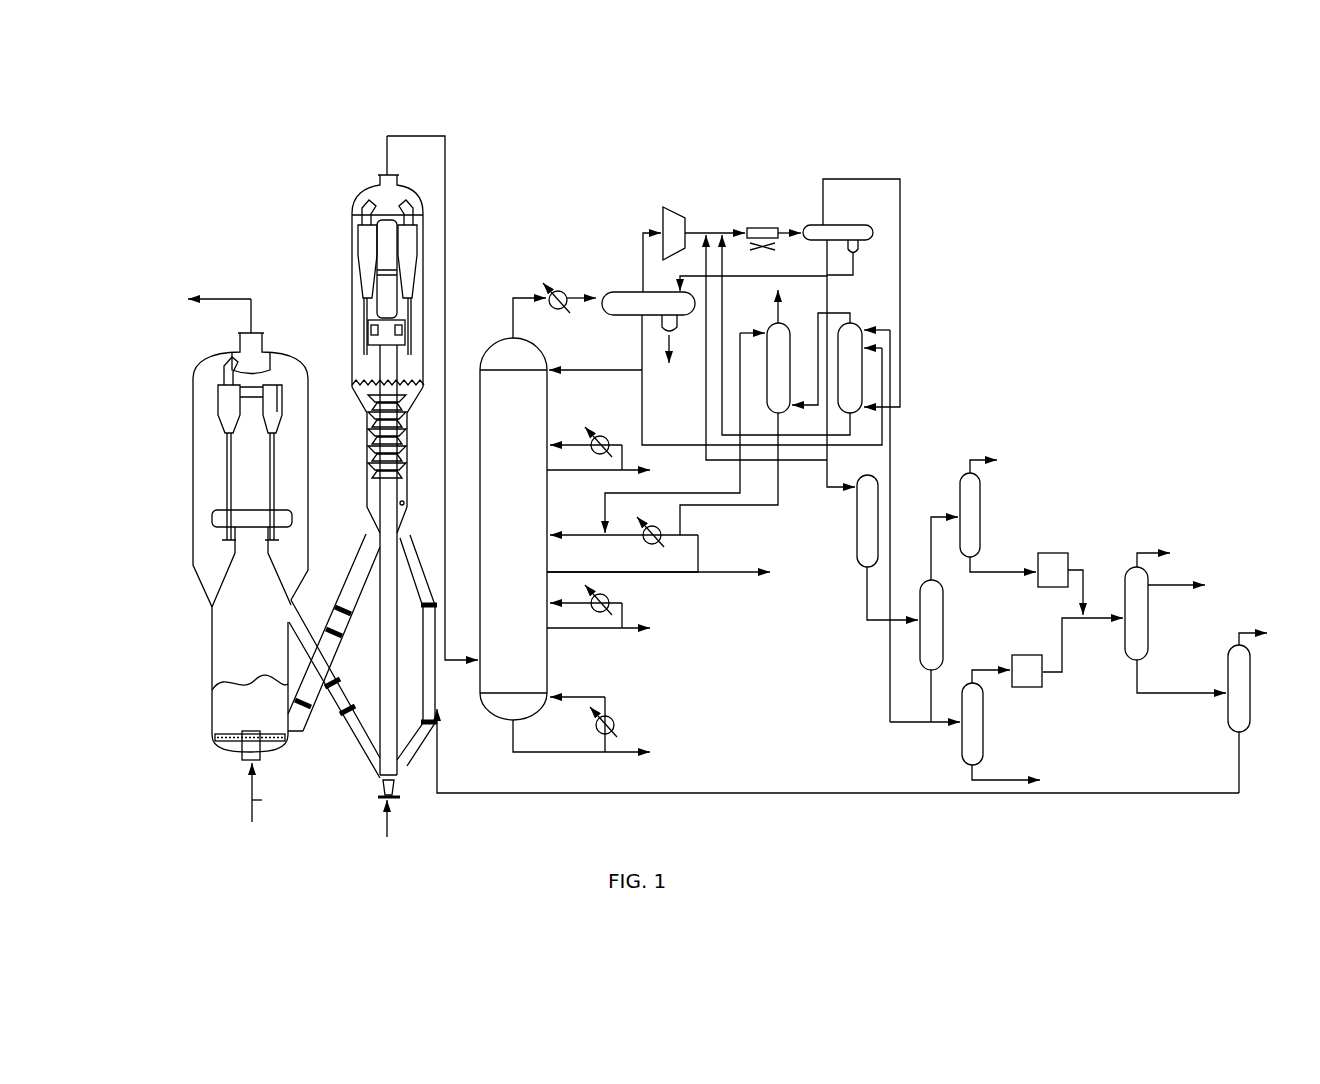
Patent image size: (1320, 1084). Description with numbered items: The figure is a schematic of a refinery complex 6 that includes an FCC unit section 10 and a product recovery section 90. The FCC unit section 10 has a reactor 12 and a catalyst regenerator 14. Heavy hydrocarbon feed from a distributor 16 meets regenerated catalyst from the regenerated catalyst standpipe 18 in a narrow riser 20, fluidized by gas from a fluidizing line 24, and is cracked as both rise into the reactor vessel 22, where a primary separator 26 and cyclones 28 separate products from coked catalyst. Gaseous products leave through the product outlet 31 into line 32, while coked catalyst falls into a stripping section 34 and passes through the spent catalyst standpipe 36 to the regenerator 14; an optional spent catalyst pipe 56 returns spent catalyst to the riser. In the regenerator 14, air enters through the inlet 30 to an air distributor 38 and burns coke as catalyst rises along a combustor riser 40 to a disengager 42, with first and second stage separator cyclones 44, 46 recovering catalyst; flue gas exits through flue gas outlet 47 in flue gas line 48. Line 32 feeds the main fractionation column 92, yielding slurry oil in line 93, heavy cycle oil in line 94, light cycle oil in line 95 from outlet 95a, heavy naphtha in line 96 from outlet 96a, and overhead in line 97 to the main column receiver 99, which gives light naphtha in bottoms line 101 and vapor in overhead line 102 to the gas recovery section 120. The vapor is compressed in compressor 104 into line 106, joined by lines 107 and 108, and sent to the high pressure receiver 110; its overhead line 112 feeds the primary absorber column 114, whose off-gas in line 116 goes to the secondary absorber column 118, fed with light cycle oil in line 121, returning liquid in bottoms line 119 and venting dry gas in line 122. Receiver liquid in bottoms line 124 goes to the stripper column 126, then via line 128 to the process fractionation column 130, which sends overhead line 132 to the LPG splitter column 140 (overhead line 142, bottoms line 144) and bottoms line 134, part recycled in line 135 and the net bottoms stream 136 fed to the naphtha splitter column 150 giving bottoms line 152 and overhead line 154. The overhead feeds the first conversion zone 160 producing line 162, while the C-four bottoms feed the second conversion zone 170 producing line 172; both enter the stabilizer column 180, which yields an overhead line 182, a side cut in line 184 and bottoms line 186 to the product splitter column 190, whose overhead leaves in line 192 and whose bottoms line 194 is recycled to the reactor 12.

The refinery complex 6 is at (1011, 181).
The FCC unit section 10 is at (225, 200).
The reactor 12 is at (335, 205).
The catalyst regenerator 14 is at (190, 353).
The distributor 16 is at (401, 704).
The regenerated catalyst standpipe 18 is at (348, 726).
The riser 20 is at (382, 608).
The reactor vessel 22 is at (352, 352).
The fluidizing line 24 is at (386, 833).
The primary separator 26 is at (374, 337).
The cyclones 28 is at (367, 249).
The air inlet 30 is at (270, 776).
The product outlet 31 is at (382, 178).
The line 32 is at (445, 136).
The stripping section 34 is at (405, 455).
The spent catalyst standpipe 36 is at (356, 556).
The air distributor 38 is at (240, 737).
The combustor riser 40 is at (240, 550).
The disengager 42 is at (218, 518).
The first stage separator cyclone 44 is at (281, 418).
The second stage separator cyclone 46 is at (222, 421).
The flue gas outlet 47 is at (241, 338).
The flue gas line 48 is at (216, 298).
The spent catalyst pipe 56 is at (425, 568).
The product recovery section 90 is at (595, 190).
The main fractionation column 92 is at (542, 352).
The line 93 is at (592, 751).
The line 94 is at (617, 630).
The line 95 is at (690, 573).
The outlet 95a is at (550, 571).
The line 96 is at (610, 473).
The outlet 96a is at (551, 473).
The overhead line 97 is at (512, 322).
The main column receiver 99 is at (633, 291).
The bottoms line 101 is at (642, 381).
The overhead line 102 is at (642, 252).
The compressor 104 is at (680, 213).
The line 106 is at (724, 232).
The line 107 is at (722, 276).
The overhead line 108 is at (706, 414).
The high pressure receiver 110 is at (864, 214).
The overhead line 112 is at (882, 179).
The primary absorber column 114 is at (861, 323).
The line 116 is at (798, 406).
The secondary absorber column 118 is at (768, 326).
The bottoms line 119 is at (780, 473).
The gas recovery section 120 is at (775, 214).
The line 121 is at (738, 483).
The line 122 is at (779, 303).
The bottoms line 124 is at (827, 261).
The stripper column 126 is at (856, 510).
The line 128 is at (866, 612).
The process fractionation column 130 is at (962, 638).
The overhead line 132 is at (930, 530).
The bottoms line 134 is at (930, 698).
The line 135 is at (901, 727).
The net bottoms stream 136 is at (941, 727).
The LPG splitter column 140 is at (981, 509).
The overhead line 142 is at (972, 459).
The bottoms line 144 is at (971, 567).
The naphtha splitter column 150 is at (984, 740).
The bottoms line 152 is at (1000, 780).
The overhead line 154 is at (974, 668).
The first conversion zone 160 is at (1060, 704).
The line 162 is at (1066, 614).
The second conversion zone 170 is at (1072, 508).
The line 172 is at (1080, 567).
The stabilizer column 180 is at (1124, 637).
The light gas outlet 182 is at (1144, 557).
The line 184 is at (1153, 586).
The bottoms line 186 is at (1139, 680).
The product splitter column 190 is at (1249, 680).
The line 192 is at (1246, 632).
The bottoms line 194 is at (738, 793).